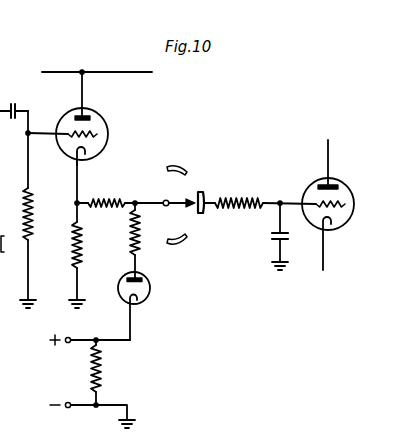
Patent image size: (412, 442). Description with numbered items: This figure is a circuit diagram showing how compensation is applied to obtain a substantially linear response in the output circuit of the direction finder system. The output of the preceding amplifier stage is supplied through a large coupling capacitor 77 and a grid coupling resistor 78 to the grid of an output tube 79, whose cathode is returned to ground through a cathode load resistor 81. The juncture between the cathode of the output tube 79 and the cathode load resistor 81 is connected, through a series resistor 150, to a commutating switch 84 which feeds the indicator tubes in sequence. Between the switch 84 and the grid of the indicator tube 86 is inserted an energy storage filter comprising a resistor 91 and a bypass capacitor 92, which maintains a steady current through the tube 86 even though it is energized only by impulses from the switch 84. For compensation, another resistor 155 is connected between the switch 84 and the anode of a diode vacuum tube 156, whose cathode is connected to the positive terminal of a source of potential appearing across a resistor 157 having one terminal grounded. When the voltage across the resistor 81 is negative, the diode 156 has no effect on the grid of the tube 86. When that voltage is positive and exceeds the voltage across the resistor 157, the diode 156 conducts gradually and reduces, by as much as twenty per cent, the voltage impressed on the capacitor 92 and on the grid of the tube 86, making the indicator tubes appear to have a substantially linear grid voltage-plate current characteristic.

The coupling capacitor 77 is at (13, 105).
The output tube 79 is at (105, 114).
The grid coupling resistor 78 is at (34, 223).
The cathode load resistor 81 is at (72, 256).
The resistor 150 is at (114, 195).
The resistor 155 is at (131, 236).
The diode vacuum tube 156 is at (150, 289).
The resistor 157 is at (103, 386).
The commutating switch 84 is at (193, 191).
The resistor 91 is at (254, 212).
The bypass capacitor 92 is at (271, 237).
The indicator tube 86 is at (318, 181).